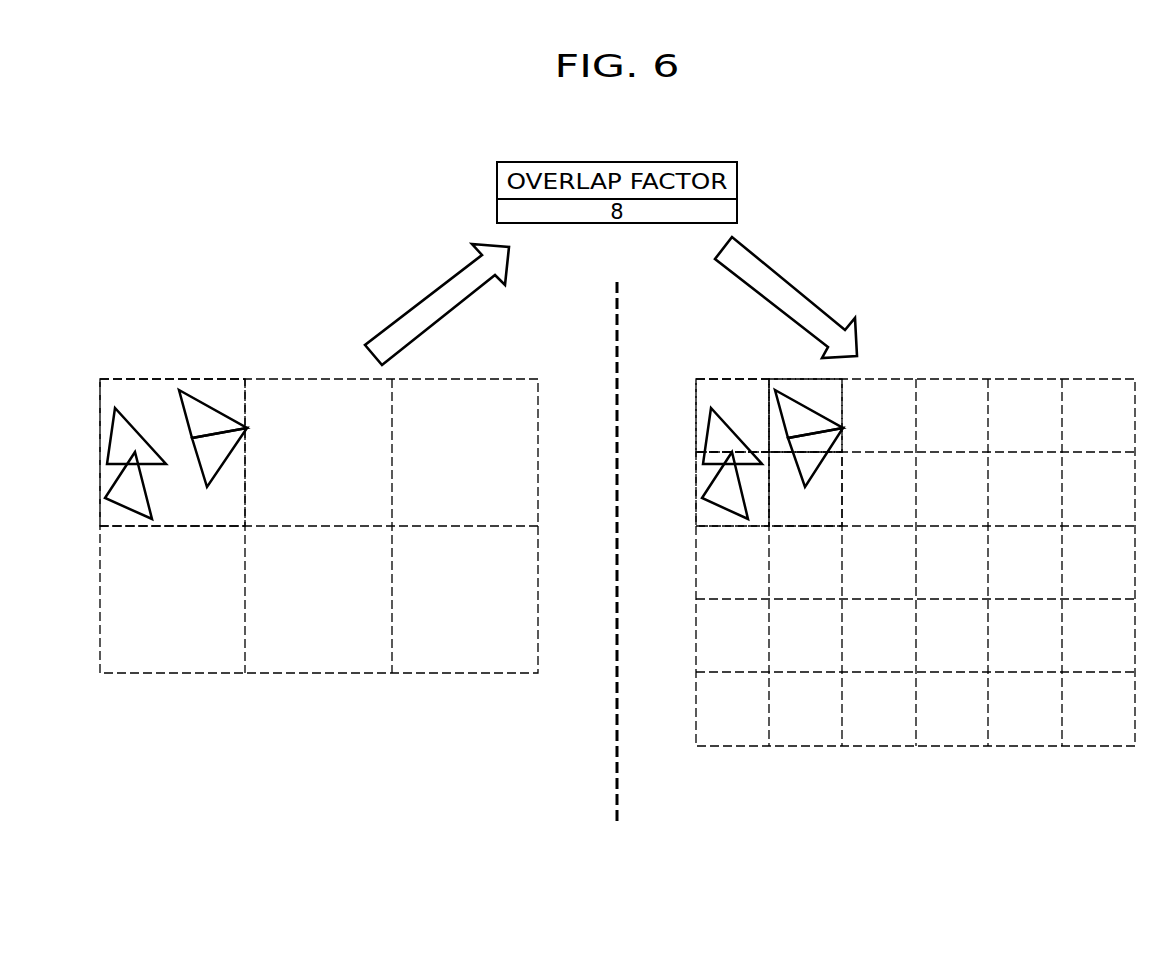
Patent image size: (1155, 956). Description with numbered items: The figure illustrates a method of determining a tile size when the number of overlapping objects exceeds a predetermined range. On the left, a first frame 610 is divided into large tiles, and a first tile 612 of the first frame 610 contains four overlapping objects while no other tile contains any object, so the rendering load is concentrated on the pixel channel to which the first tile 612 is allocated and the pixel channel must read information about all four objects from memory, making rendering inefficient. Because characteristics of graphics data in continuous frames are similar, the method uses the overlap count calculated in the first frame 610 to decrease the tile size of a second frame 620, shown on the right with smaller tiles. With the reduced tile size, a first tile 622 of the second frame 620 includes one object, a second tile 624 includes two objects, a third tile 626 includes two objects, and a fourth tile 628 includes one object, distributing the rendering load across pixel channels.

The first frame 610 is at (318, 674).
The first tile 612 is at (171, 375).
The second frame 620 is at (890, 747).
The first tile 622 is at (731, 375).
The second tile 624 is at (832, 395).
The third tile 626 is at (703, 477).
The fourth tile 628 is at (830, 507).